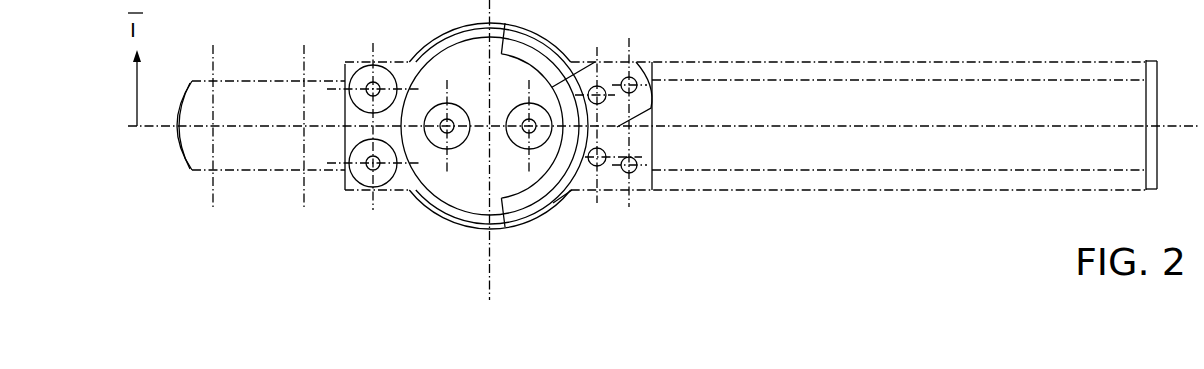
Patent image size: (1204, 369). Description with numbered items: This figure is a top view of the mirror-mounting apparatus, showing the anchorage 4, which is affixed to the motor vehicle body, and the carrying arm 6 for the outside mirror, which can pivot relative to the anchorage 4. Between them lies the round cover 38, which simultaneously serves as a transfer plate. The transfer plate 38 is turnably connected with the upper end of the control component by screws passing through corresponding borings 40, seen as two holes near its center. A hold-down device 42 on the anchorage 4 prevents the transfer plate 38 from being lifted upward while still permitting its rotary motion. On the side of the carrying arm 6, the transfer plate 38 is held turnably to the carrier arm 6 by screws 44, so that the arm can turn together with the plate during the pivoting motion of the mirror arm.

The anchorage 4 is at (867, 162).
The carrying arm 6 is at (265, 155).
The cover 38 is at (477, 200).
The borings 40 is at (458, 136).
The hold-down device 42 is at (611, 73).
The screws 44 is at (360, 75).